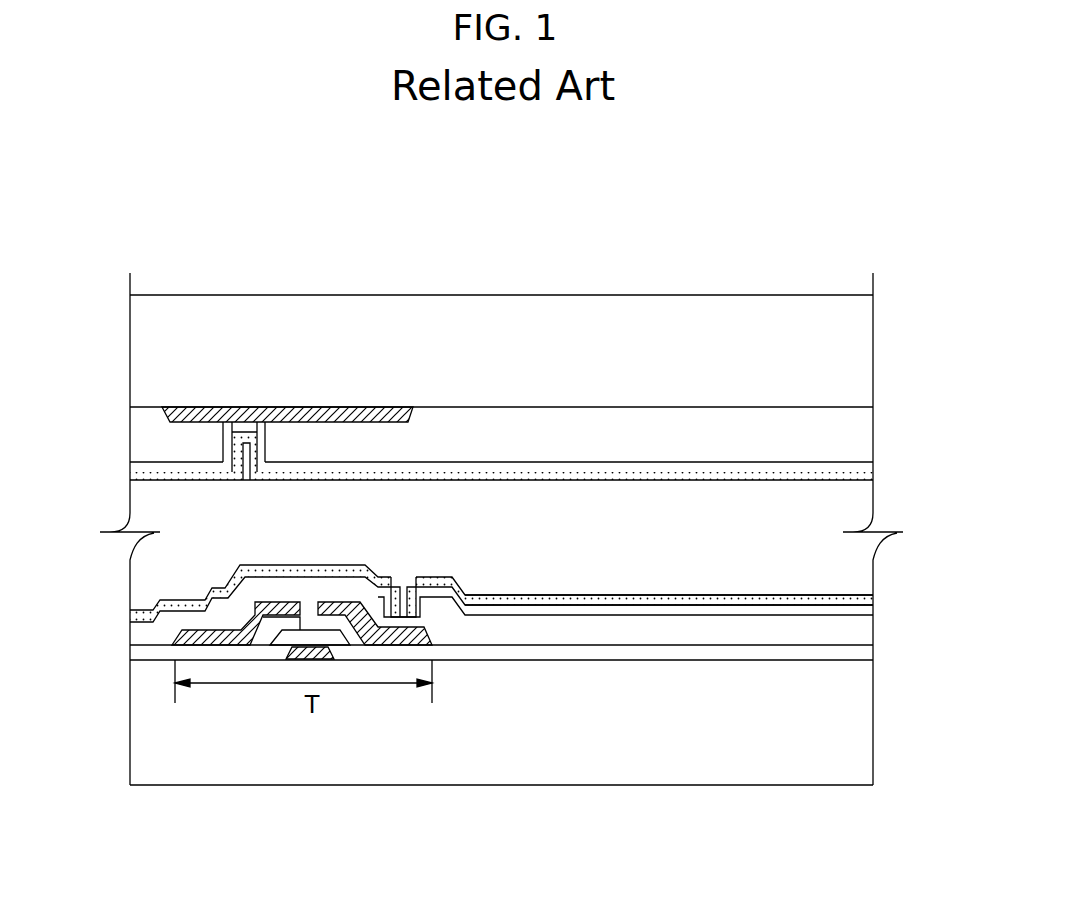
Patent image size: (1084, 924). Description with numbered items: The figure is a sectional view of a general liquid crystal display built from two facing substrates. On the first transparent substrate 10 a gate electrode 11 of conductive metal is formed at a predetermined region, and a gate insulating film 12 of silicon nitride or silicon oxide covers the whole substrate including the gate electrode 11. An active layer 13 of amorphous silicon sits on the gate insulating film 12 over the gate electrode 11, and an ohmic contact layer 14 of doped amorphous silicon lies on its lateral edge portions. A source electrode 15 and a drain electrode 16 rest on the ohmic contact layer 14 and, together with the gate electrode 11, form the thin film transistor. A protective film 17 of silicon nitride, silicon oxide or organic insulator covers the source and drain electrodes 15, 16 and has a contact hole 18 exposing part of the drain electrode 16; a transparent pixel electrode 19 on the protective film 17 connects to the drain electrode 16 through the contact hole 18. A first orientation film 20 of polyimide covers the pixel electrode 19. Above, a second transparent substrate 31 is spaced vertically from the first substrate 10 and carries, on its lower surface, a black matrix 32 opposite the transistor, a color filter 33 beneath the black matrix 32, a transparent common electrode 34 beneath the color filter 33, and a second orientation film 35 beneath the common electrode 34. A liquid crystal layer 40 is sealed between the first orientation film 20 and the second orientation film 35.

The first transparent substrate 10 is at (600, 767).
The gate electrode 11 is at (290, 661).
The gate insulating film 12 is at (723, 648).
The active layer 13 is at (325, 647).
The ohmic contact layer 14 is at (252, 601).
The source electrode 15 is at (281, 605).
The drain electrode 16 is at (353, 605).
The protective film 17 is at (135, 634).
The contact hole 18 is at (402, 592).
The pixel electrode 19 is at (574, 608).
The first orientation film 20 is at (855, 597).
The second transparent substrate 31 is at (392, 338).
The black matrix 32 is at (262, 415).
The color filter 33 is at (510, 430).
The common electrode 34 is at (637, 470).
The second orientation film 35 is at (762, 478).
The liquid crystal layer 40 is at (843, 567).